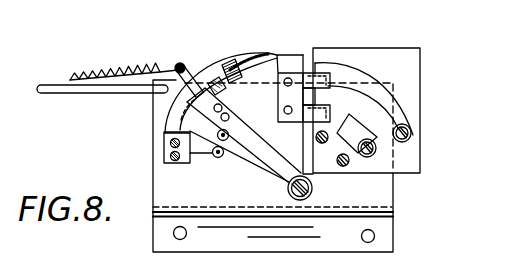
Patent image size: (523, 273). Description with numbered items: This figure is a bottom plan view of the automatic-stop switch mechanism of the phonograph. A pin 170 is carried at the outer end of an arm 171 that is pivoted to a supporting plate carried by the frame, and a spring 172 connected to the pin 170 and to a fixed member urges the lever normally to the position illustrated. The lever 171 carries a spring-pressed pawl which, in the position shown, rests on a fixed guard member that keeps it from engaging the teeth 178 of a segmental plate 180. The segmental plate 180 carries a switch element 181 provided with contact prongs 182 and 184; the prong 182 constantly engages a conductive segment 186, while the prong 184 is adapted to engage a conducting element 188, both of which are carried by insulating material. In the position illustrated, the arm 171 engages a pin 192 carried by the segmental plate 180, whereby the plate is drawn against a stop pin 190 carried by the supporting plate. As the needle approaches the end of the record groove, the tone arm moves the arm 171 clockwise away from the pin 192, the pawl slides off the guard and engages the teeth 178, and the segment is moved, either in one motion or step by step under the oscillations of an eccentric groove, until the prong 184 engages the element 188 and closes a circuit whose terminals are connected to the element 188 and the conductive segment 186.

The pin 170 is at (181, 63).
The arm 171 is at (266, 150).
The spring 172 is at (131, 66).
The teeth 178 is at (238, 64).
The segmental plate 180 is at (267, 53).
The switch element 181 is at (310, 70).
The contact prong 182 is at (332, 77).
The contact prong 184 is at (330, 110).
The conductive segment 186 is at (378, 100).
The conducting element 188 is at (357, 133).
The stop pin 190 is at (190, 153).
The pin 192 is at (164, 132).